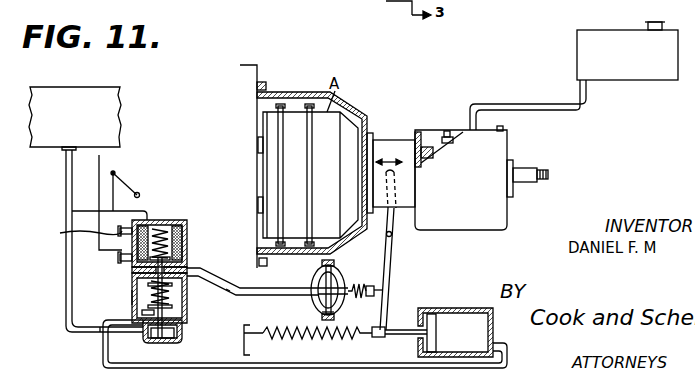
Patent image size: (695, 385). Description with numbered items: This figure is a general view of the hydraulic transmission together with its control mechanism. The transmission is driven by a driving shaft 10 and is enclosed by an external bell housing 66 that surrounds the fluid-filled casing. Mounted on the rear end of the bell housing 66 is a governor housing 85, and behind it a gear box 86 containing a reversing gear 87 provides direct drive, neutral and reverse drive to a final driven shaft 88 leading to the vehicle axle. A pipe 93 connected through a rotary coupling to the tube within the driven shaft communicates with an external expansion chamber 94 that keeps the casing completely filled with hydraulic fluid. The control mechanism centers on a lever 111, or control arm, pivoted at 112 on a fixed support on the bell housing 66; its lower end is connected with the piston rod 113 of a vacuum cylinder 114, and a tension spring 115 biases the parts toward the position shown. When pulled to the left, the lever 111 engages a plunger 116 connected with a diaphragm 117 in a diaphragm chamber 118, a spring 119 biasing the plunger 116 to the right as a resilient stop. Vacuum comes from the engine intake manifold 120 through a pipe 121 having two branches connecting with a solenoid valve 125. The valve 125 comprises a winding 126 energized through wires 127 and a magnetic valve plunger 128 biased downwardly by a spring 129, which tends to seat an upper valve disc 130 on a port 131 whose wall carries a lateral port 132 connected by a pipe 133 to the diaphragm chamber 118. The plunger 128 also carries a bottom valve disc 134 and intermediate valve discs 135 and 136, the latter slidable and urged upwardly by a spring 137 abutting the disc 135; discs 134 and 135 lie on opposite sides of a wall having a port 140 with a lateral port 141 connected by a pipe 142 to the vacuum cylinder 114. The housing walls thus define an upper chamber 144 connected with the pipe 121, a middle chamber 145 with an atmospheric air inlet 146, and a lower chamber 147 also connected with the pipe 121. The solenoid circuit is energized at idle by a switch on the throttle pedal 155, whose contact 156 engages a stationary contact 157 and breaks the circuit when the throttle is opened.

The driving shaft 10 is at (257, 160).
The bell housing 66 is at (302, 94).
The governor housing 85 is at (378, 139).
The gear box 86 is at (500, 142).
The reversing gear 87 is at (448, 136).
The final driven shaft 88 is at (526, 168).
The pipe 93 is at (530, 104).
The expansion chamber 94 is at (580, 54).
The lever 111 is at (392, 216).
The pivot 112 is at (392, 236).
The piston rod 113 is at (388, 337).
The vacuum cylinder 114 is at (476, 308).
The tension spring 115 is at (324, 340).
The plunger 116 is at (375, 291).
The diaphragm 117 is at (338, 271).
The diaphragm chamber 118 is at (320, 313).
The spring 119 is at (362, 285).
The intake manifold 120 is at (46, 90).
The pipe 121 is at (66, 176).
The solenoid valve 125 is at (164, 276).
The winding 126 is at (190, 223).
The wires 127 is at (99, 194).
The magnetic valve plunger 128 is at (140, 275).
The spring 129 is at (161, 227).
The upper valve disc 130 is at (185, 246).
The port 131 is at (190, 262).
The lateral port 132 is at (186, 292).
The pipe 133 is at (256, 291).
The bottom valve disc 134 is at (166, 337).
The intermediate valve disc 135 is at (186, 312).
The intermediate valve disc 136 is at (142, 290).
The spring 137 is at (236, 294).
The port 140 is at (181, 322).
The lateral port 141 is at (136, 312).
The pipe 142 is at (103, 362).
The upper chamber 144 is at (77, 233).
The middle chamber 145 is at (100, 329).
The atmospheric air inlet 146 is at (132, 297).
The lower chamber 147 is at (153, 343).
The throttle pedal 155 is at (128, 185).
The contact 156 is at (120, 176).
The stationary contact 157 is at (116, 172).